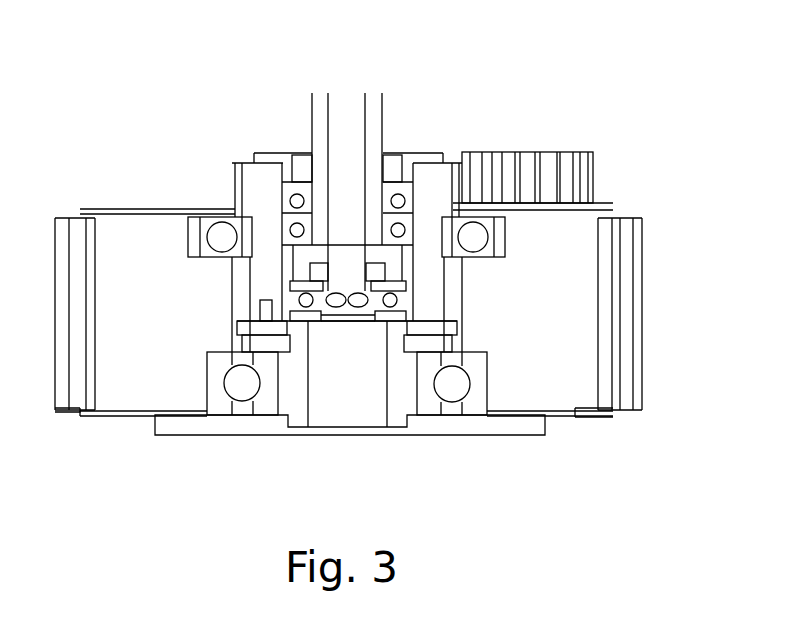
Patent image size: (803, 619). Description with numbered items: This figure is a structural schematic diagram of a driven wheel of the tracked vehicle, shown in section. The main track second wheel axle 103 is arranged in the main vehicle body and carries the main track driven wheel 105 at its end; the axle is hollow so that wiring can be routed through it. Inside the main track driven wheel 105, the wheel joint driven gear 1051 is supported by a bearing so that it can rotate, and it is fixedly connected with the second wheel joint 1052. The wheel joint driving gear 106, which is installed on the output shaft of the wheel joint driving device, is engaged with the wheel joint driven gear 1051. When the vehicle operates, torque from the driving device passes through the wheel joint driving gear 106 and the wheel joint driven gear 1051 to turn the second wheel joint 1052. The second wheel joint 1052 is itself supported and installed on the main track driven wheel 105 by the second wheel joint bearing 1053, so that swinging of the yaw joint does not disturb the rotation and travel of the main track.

The main track second wheel axle 103 is at (325, 120).
The main track driven wheel 105 is at (175, 292).
The wheel joint driven gear 1051 is at (258, 188).
The second wheel joint 1052 is at (308, 388).
The second wheel joint bearing 1053 is at (475, 406).
The wheel joint driving gear 106 is at (500, 162).